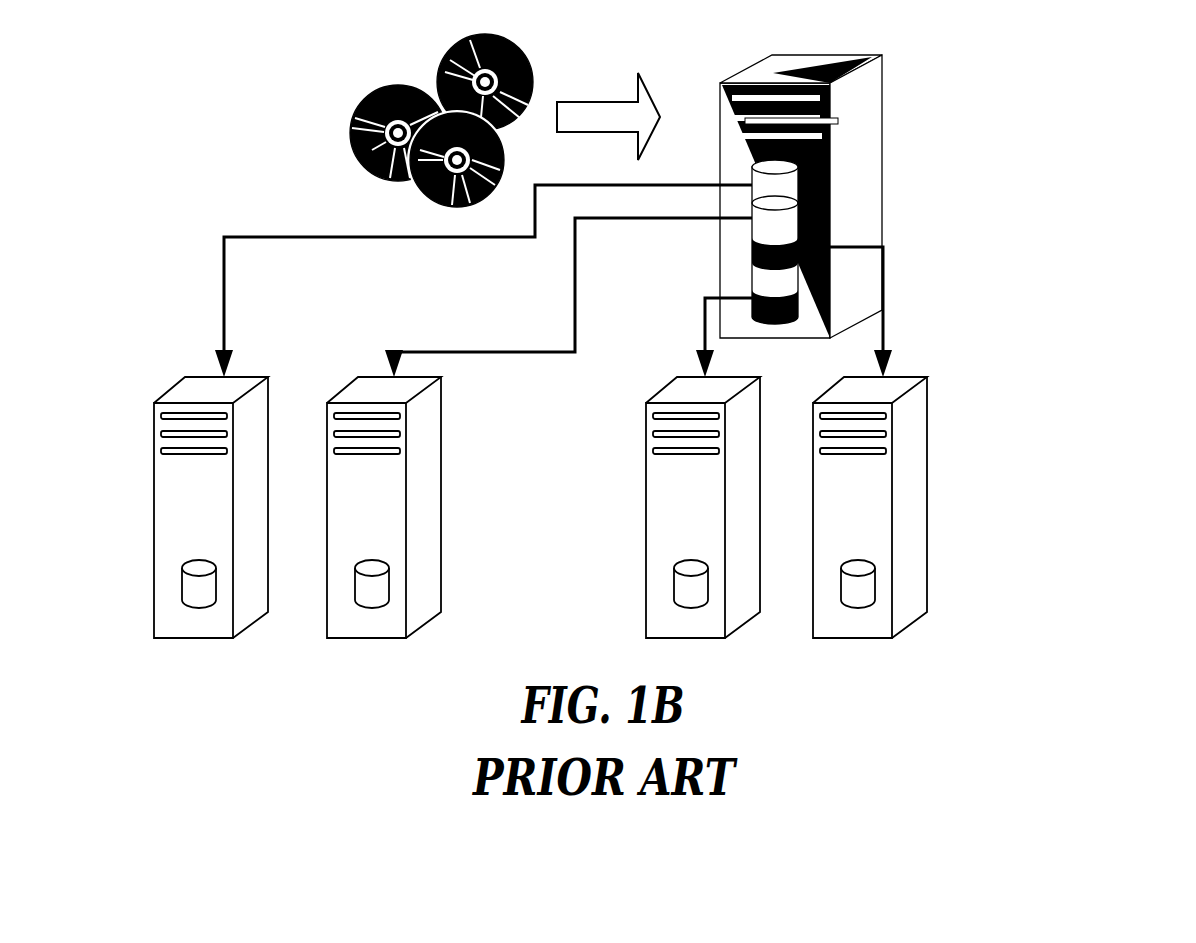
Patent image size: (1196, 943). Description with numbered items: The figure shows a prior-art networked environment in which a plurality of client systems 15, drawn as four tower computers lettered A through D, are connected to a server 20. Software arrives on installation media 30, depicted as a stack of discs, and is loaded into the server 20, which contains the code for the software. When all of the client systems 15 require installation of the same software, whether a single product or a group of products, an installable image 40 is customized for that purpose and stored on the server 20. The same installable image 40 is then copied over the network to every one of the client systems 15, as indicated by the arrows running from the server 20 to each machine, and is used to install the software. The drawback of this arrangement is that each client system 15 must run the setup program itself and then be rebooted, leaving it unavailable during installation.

The installation media 30 is at (363, 122).
The server 20 is at (858, 51).
The installable image 40 is at (805, 243).
The client systems 15 is at (540, 529).